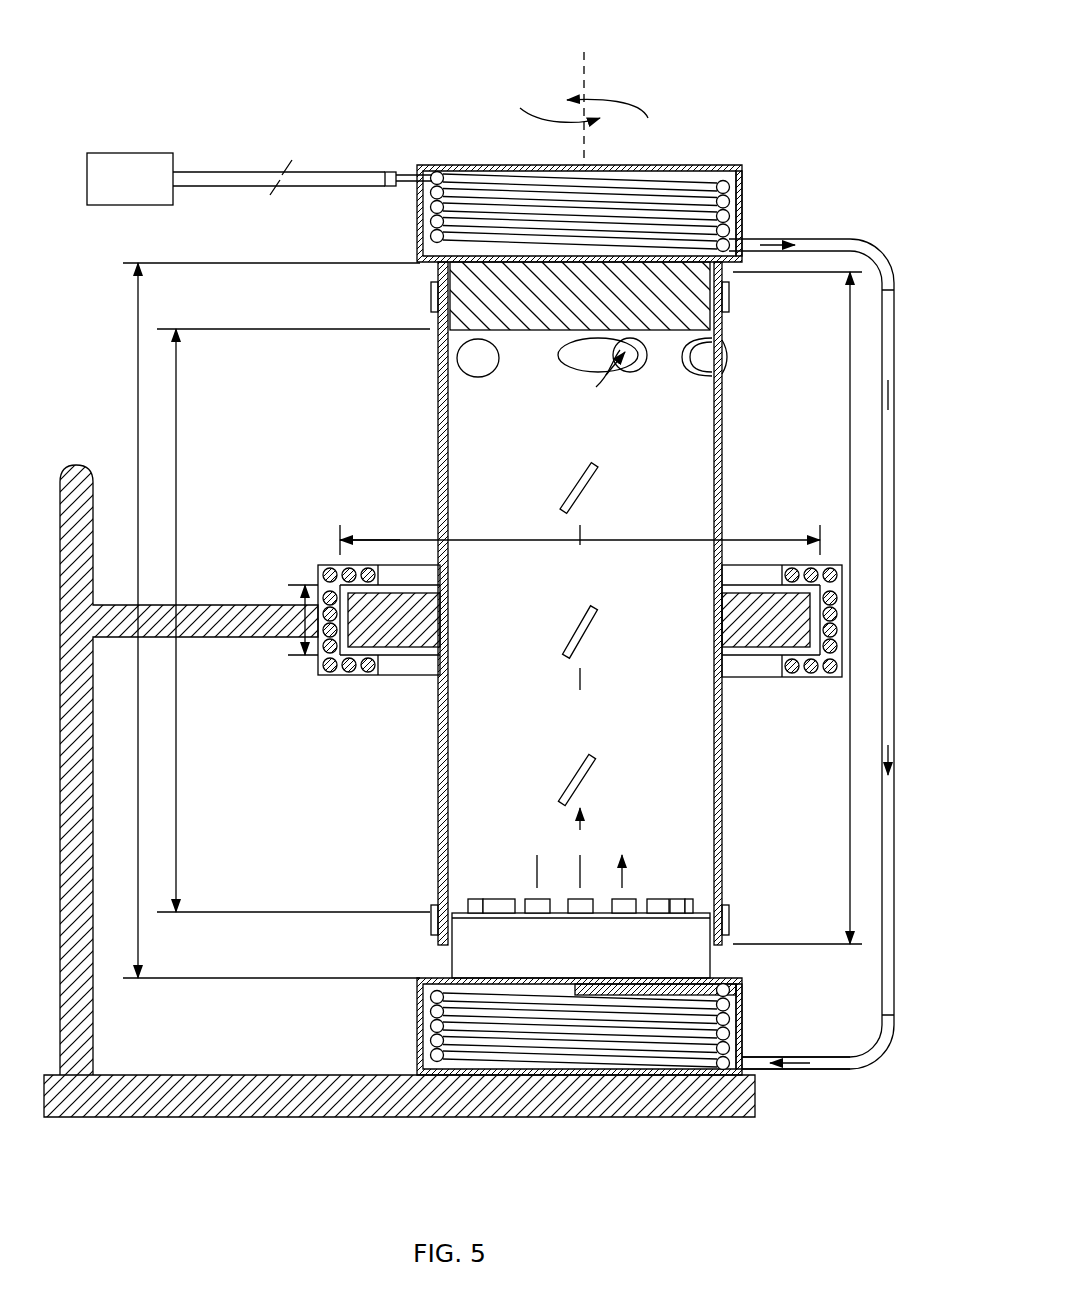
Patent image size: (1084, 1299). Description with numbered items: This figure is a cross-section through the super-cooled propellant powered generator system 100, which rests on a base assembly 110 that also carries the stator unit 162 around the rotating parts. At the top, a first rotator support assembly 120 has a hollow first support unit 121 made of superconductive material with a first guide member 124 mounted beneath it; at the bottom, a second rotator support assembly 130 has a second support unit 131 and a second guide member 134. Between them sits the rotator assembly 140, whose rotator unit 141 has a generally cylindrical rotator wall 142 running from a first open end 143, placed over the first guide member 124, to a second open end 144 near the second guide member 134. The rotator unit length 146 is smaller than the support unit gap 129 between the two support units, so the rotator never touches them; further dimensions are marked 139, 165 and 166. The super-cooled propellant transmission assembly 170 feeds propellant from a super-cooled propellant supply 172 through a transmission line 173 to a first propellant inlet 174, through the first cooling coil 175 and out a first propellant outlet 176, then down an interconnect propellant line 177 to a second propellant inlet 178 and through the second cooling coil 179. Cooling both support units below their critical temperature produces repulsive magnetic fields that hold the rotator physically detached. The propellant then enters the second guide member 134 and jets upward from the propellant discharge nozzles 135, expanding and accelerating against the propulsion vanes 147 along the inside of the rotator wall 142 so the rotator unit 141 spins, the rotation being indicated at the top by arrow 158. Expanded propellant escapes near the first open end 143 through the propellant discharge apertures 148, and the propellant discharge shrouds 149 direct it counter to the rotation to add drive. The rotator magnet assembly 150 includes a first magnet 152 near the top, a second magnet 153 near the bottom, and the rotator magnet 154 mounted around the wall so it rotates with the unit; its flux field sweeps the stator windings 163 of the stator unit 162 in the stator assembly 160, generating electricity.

The super-cooled propellant powered generator system 100 is at (856, 75).
The base assembly 110 is at (175, 1130).
The first rotator support assembly 120 is at (748, 162).
The first support unit 121 is at (745, 190).
The first guide member 124 is at (718, 333).
The support unit gap 129 is at (140, 312).
The second rotator support assembly 130 is at (752, 985).
The second support unit 131 is at (744, 1012).
The second guide member 134 is at (698, 930).
The propellant discharge nozzles 135 is at (522, 905).
The chamber height 139 is at (178, 405).
The rotator assembly 140 is at (318, 466).
The rotator unit 141 is at (440, 455).
The rotator wall 142 is at (440, 365).
The first open end 143 is at (433, 285).
The second open end 144 is at (432, 925).
The rotator unit length 146 is at (850, 380).
The propulsion vane 147 is at (598, 498).
The propellant discharge aperture 148 is at (635, 368).
The propellant discharge shroud 149 is at (583, 362).
The rotator magnet assembly 150 is at (341, 674).
The first magnet 152 is at (728, 295).
The second magnet 153 is at (690, 945).
The rotator magnet 154 is at (403, 648).
The rotation direction 158 is at (520, 108).
The stator assembly 160 is at (847, 675).
The stator unit 162 is at (320, 565).
The stator winding 163 is at (915, 664).
The width dimension 165 is at (735, 565).
The core height 166 is at (300, 620).
The super-cooled propellant transmission assembly 170 is at (316, 148).
The super-cooled propellant supply 172 is at (130, 179).
The super-cooled propellant transmission line 173 is at (208, 186).
The first propellant inlet 174 is at (420, 170).
The first cooling coil 175 is at (650, 202).
The first propellant outlet 176 is at (750, 245).
The interconnect propellant line 177 is at (898, 520).
The second propellant inlet 178 is at (745, 1060).
The second cooling coil 179 is at (595, 1040).